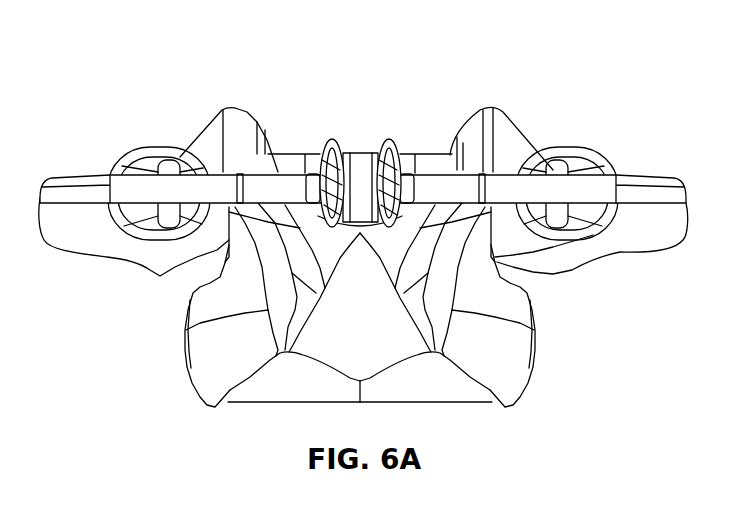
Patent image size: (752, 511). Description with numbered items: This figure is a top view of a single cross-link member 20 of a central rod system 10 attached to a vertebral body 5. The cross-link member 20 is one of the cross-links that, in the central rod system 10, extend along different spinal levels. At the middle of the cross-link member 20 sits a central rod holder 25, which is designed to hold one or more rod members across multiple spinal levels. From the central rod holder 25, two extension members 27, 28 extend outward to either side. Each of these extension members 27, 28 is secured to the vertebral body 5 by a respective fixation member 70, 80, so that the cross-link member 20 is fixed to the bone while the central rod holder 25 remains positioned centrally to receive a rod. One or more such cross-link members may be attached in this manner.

The vertebral body 5 is at (514, 163).
The central rod system 10 is at (333, 140).
The cross-link member 20 is at (610, 170).
The central rod holder 25 is at (395, 140).
The extension member 27 is at (283, 155).
The extension member 28 is at (485, 168).
The fixation member 70 is at (137, 146).
The fixation member 80 is at (600, 155).